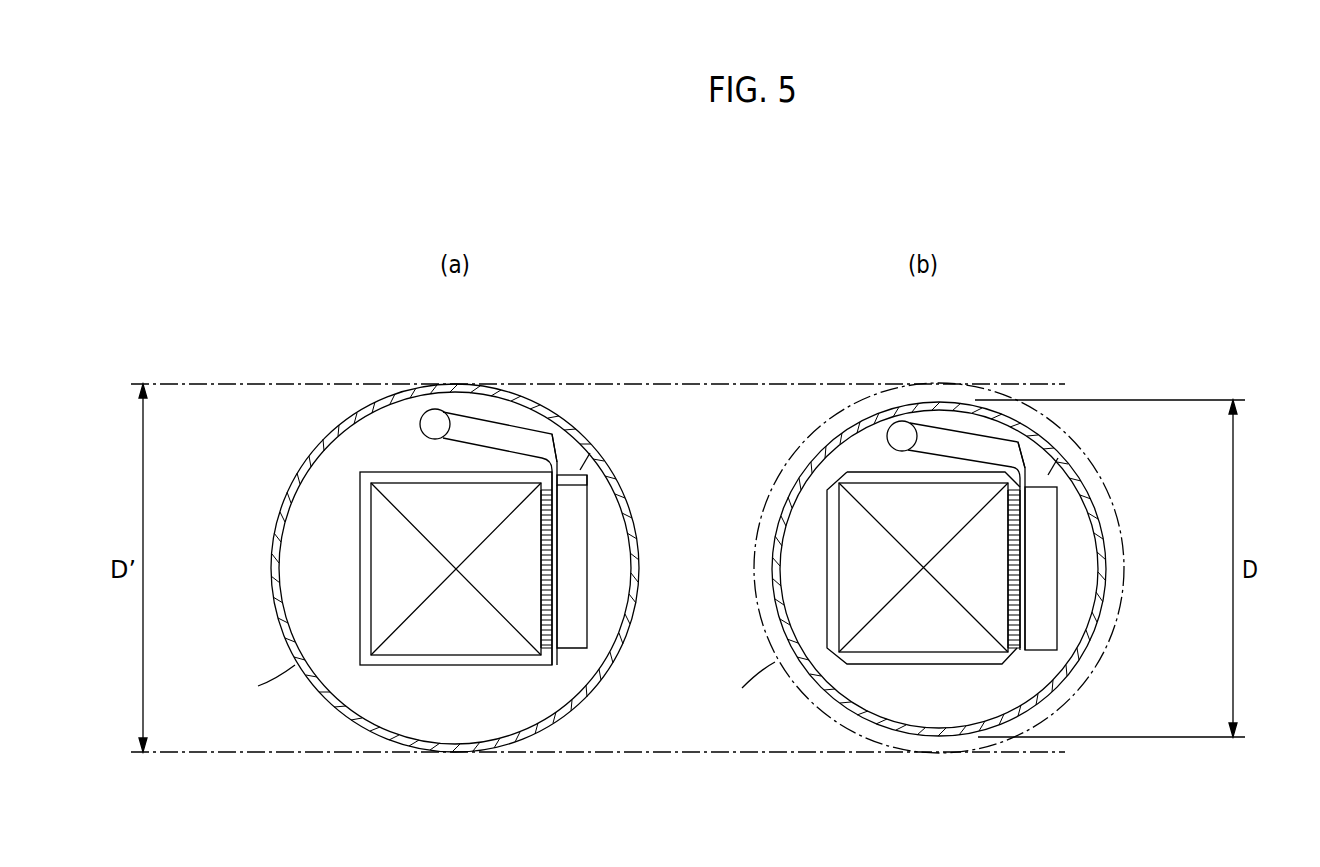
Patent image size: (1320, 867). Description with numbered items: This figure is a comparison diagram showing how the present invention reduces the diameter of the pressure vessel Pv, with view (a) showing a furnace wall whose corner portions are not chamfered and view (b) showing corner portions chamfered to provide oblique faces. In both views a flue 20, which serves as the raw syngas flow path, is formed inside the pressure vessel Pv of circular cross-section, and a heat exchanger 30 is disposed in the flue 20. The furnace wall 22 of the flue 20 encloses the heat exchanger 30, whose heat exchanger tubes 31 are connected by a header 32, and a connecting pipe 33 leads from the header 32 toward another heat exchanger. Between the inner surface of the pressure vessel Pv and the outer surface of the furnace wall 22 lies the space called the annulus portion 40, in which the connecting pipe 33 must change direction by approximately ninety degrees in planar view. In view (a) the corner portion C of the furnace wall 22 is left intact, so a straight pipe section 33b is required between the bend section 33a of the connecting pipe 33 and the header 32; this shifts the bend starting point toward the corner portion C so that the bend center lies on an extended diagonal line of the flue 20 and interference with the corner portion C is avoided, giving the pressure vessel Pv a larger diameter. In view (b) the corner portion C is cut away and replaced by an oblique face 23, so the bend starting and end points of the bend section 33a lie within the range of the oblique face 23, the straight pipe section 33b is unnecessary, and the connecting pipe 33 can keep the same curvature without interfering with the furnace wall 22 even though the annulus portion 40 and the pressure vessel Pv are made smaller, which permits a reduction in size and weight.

The flue 20 is at (359, 505).
The furnace wall 22 is at (428, 665).
The oblique face 23 is at (1022, 465).
The heat exchanger 30 is at (385, 568).
The heat exchanger tube 31 is at (548, 665).
The header 32 is at (578, 565).
The connecting pipe 33 is at (488, 416).
The bend section 33a is at (567, 453).
The straight pipe section 33b is at (582, 483).
The annulus portion 40 is at (503, 710).
The corner portion C is at (556, 460).
The pressure vessel Pv is at (501, 683).